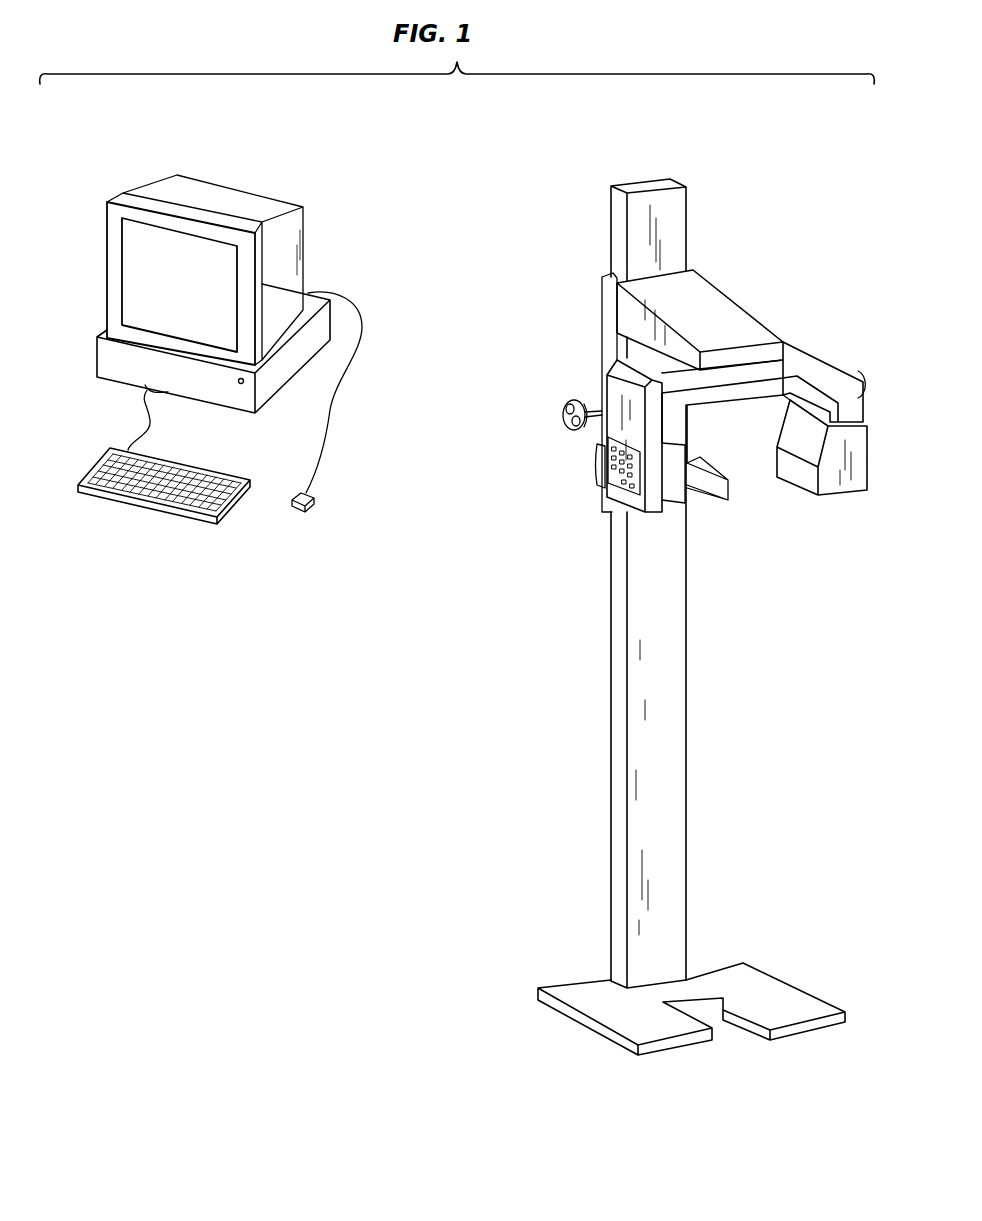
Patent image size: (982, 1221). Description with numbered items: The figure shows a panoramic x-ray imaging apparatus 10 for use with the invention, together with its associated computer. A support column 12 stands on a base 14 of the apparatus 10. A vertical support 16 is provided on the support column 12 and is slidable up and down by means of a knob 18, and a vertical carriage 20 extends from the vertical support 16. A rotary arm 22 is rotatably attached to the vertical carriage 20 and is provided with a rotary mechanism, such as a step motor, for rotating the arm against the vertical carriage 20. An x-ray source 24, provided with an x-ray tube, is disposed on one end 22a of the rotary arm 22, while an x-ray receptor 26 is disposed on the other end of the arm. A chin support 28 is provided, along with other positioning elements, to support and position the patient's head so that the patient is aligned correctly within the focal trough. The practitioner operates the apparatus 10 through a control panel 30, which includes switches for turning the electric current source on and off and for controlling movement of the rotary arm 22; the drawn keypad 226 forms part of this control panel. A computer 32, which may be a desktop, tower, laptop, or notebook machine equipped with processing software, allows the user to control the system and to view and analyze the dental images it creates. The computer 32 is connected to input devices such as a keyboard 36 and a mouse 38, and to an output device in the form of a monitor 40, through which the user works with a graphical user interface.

The panoramic x-ray imaging apparatus 10 is at (862, 933).
The support column 12 is at (668, 812).
The base 14 is at (584, 990).
The vertical support 16 is at (608, 300).
The knob 18 is at (562, 410).
The vertical carriage 20 is at (719, 334).
The rotary arm 22 is at (616, 348).
The one end of the rotary arm 22a is at (782, 485).
The x-ray source 24 is at (838, 497).
The x-ray receptor 26 is at (677, 493).
The chin support 28 is at (700, 478).
The control panel 30 is at (612, 502).
The keypad 226 is at (613, 430).
The computer 32 is at (167, 392).
The keyboard 36 is at (227, 513).
The mouse 38 is at (311, 508).
The monitor 40 is at (140, 290).